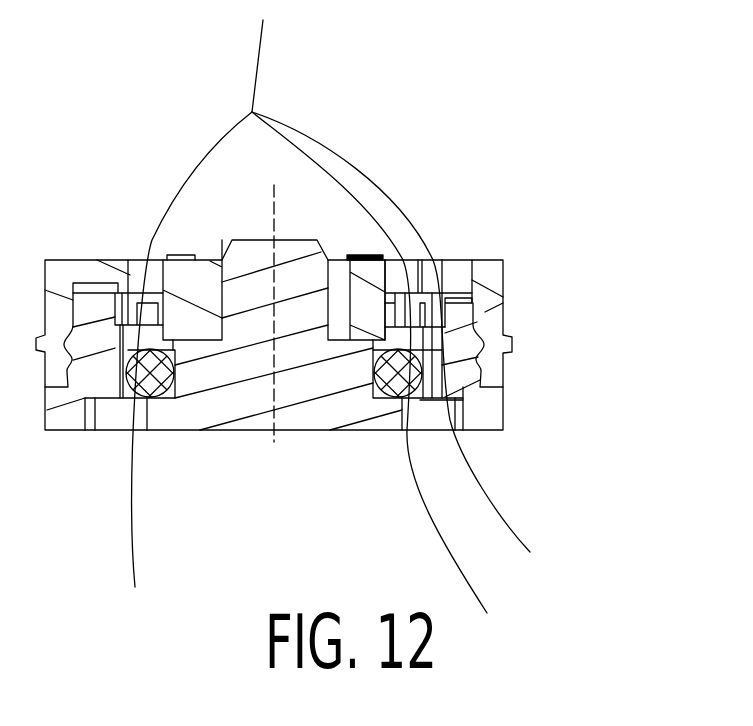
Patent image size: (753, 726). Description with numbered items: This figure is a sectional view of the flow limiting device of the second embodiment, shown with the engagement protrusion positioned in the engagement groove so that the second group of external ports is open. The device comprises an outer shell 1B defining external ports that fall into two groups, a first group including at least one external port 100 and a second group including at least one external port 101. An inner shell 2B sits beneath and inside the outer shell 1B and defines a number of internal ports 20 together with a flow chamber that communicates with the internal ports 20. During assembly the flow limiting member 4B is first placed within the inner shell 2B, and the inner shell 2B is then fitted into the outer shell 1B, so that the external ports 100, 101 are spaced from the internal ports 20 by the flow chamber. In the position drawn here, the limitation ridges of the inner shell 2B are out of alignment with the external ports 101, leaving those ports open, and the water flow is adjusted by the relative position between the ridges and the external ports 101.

The external port 100 is at (400, 288).
The external port 101 is at (453, 287).
The outer shell 1B is at (493, 308).
The inner shell 2B is at (325, 380).
The flow limiting member 4B is at (463, 400).
The internal port 20 is at (430, 418).